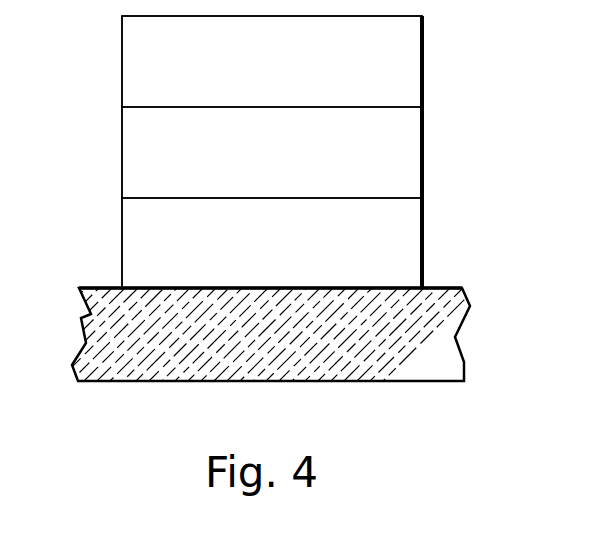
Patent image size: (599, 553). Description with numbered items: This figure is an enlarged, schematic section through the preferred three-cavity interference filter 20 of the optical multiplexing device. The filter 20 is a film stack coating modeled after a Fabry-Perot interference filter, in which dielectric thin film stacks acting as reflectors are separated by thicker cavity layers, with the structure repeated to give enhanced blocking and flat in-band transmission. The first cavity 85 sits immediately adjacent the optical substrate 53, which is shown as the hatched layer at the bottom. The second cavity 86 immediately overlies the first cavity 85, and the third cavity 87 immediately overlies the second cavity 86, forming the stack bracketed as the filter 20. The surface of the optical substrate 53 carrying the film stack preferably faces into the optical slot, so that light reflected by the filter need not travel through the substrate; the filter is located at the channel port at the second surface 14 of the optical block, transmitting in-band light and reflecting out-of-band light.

The filter 20 is at (68, 16).
The third cavity 87 is at (409, 44).
The second cavity 86 is at (406, 159).
The first cavity 85 is at (407, 238).
The second surface 14 is at (445, 288).
The optical substrate 53 is at (338, 361).